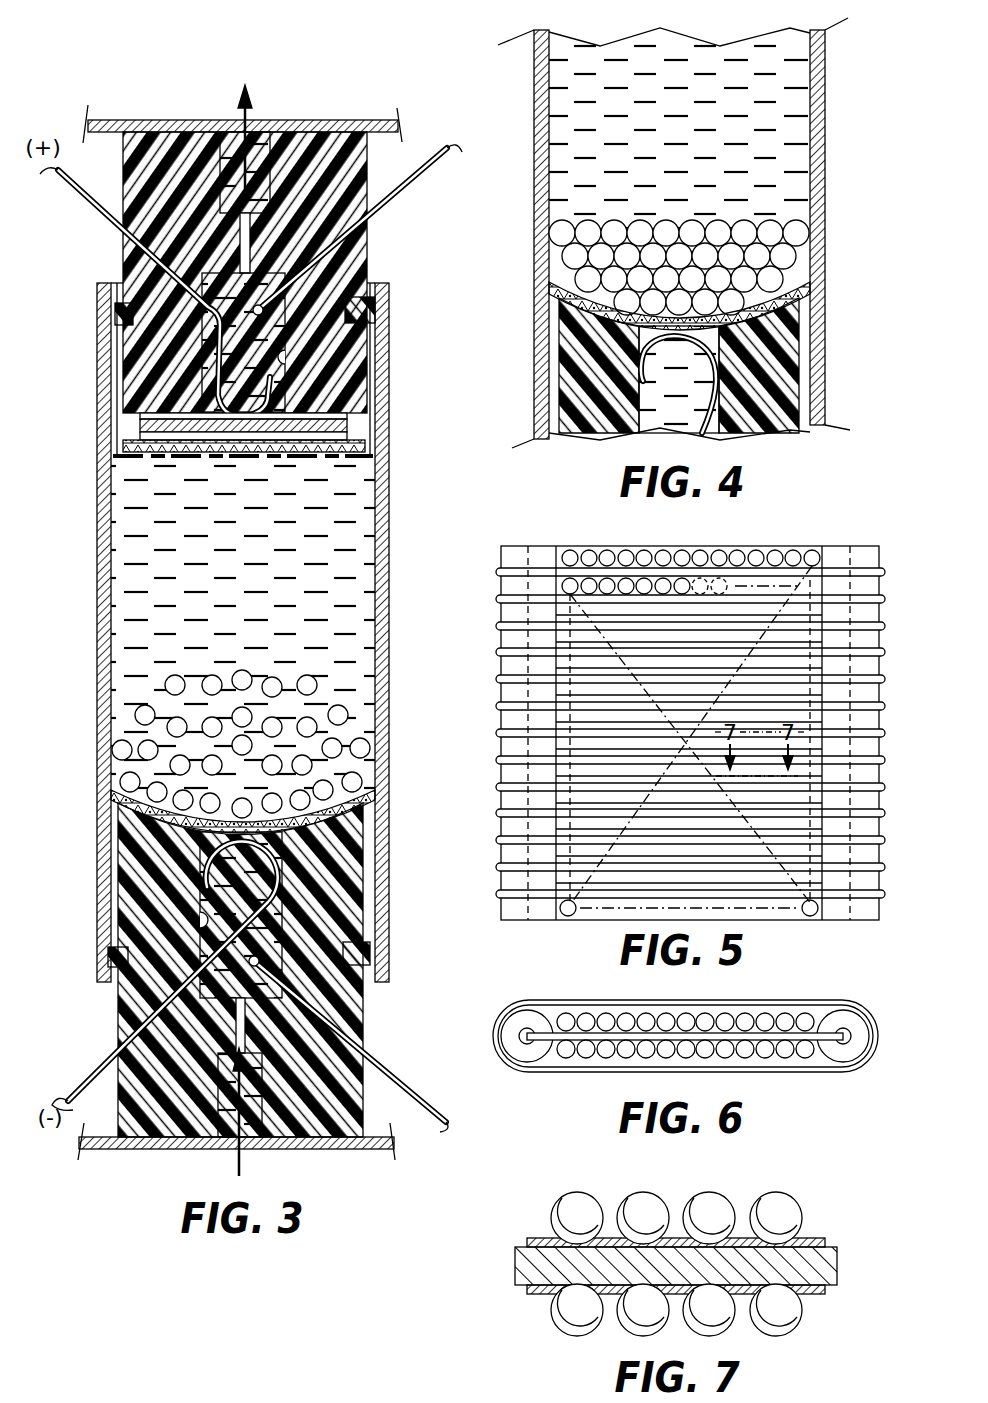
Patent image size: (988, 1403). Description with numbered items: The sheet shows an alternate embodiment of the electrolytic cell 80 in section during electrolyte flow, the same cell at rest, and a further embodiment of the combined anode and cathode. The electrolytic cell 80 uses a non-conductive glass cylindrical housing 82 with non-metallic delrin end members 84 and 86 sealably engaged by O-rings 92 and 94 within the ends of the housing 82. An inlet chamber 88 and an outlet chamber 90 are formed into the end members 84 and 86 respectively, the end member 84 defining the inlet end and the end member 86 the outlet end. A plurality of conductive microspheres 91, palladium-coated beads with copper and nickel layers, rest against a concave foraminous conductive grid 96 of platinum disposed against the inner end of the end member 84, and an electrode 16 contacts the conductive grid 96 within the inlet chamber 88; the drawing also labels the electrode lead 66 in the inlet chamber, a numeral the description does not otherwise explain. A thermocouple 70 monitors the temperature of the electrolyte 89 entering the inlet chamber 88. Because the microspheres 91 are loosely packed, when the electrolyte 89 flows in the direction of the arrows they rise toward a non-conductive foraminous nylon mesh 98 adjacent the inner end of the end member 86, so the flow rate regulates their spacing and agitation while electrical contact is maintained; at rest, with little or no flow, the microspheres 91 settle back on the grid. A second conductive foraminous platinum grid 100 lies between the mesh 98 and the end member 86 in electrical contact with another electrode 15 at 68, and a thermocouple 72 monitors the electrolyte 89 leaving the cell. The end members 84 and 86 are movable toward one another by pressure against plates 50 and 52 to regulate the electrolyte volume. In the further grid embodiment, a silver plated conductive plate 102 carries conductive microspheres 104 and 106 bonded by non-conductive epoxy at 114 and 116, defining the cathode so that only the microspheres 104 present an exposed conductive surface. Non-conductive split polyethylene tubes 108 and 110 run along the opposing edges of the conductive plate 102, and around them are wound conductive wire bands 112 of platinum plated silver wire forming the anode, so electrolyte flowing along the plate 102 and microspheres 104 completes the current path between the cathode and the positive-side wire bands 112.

In FIG. 3, the electrode 15 is at (100, 1070).
In FIG. 4, the electrode 15 is at (706, 432).
In FIG. 3, the electrode 16 is at (92, 213).
In FIG. 3, the plate 50 is at (317, 1150).
In FIG. 3, the plate 52 is at (303, 121).
In FIG. 3, the negative electrode loop 66 is at (210, 865).
In FIG. 4, the negative electrode loop 66 is at (636, 356).
In FIG. 3, the electrical contact point 68 is at (217, 370).
In FIG. 3, the thermocouple 70 is at (395, 1078).
In FIG. 3, the thermocouple 72 is at (377, 212).
In FIG. 3, the electrolytic cell 80 is at (405, 438).
In FIG. 4, the electrolytic cell 80 is at (835, 137).
In FIG. 3, the cylindrical housing 82 is at (390, 497).
In FIG. 4, the cylindrical housing 82 is at (826, 60).
In FIG. 3, the end member 84 is at (347, 862).
In FIG. 4, the end member 84 is at (783, 352).
In FIG. 3, the end member 86 is at (343, 153).
In FIG. 3, the inlet chamber 88 is at (197, 907).
In FIG. 4, the inlet chamber 88 is at (637, 372).
In FIG. 3, the electrolyte 89 is at (217, 605).
In FIG. 4, the electrolyte 89 is at (674, 181).
In FIG. 3, the outlet chamber 90 is at (283, 353).
In FIG. 3, the conductive microspheres 91 is at (307, 685).
In FIG. 4, the conductive microspheres 91 is at (758, 250).
In FIG. 3, the O-ring 92 is at (360, 938).
In FIG. 3, the O-ring 94 is at (345, 302).
In FIG. 3, the conductive grid 96 is at (313, 823).
In FIG. 3, the non-conductive mesh 98 is at (205, 460).
In FIG. 3, the second conductive grid 100 is at (175, 450).
In FIG. 5, the second conductive grid 100 is at (890, 618).
In FIG. 6, the second conductive grid 100 is at (768, 995).
In FIG. 5, the conductive plate 102 is at (752, 546).
In FIG. 6, the conductive plate 102 is at (793, 1020).
In FIG. 7, the conductive plate 102 is at (825, 1247).
In FIG. 6, the conductive microspheres 104 is at (643, 1023).
In FIG. 7, the conductive microspheres 104 is at (777, 1220).
In FIG. 5, the conductive microspheres 106 is at (668, 583).
In FIG. 6, the conductive microspheres 106 is at (762, 1050).
In FIG. 7, the conductive microspheres 106 is at (777, 1310).
In FIG. 5, the split polyethylene tube 108 is at (861, 560).
In FIG. 6, the split polyethylene tube 108 is at (852, 1022).
In FIG. 5, the split polyethylene tube 110 is at (512, 585).
In FIG. 6, the split polyethylene tube 110 is at (512, 1022).
In FIG. 5, the conductive wire bands 112 is at (614, 868).
In FIG. 6, the conductive wire bands 112 is at (575, 1072).
In FIG. 7, the epoxy bond 114 is at (613, 1233).
In FIG. 7, the epoxy bond 116 is at (610, 1303).